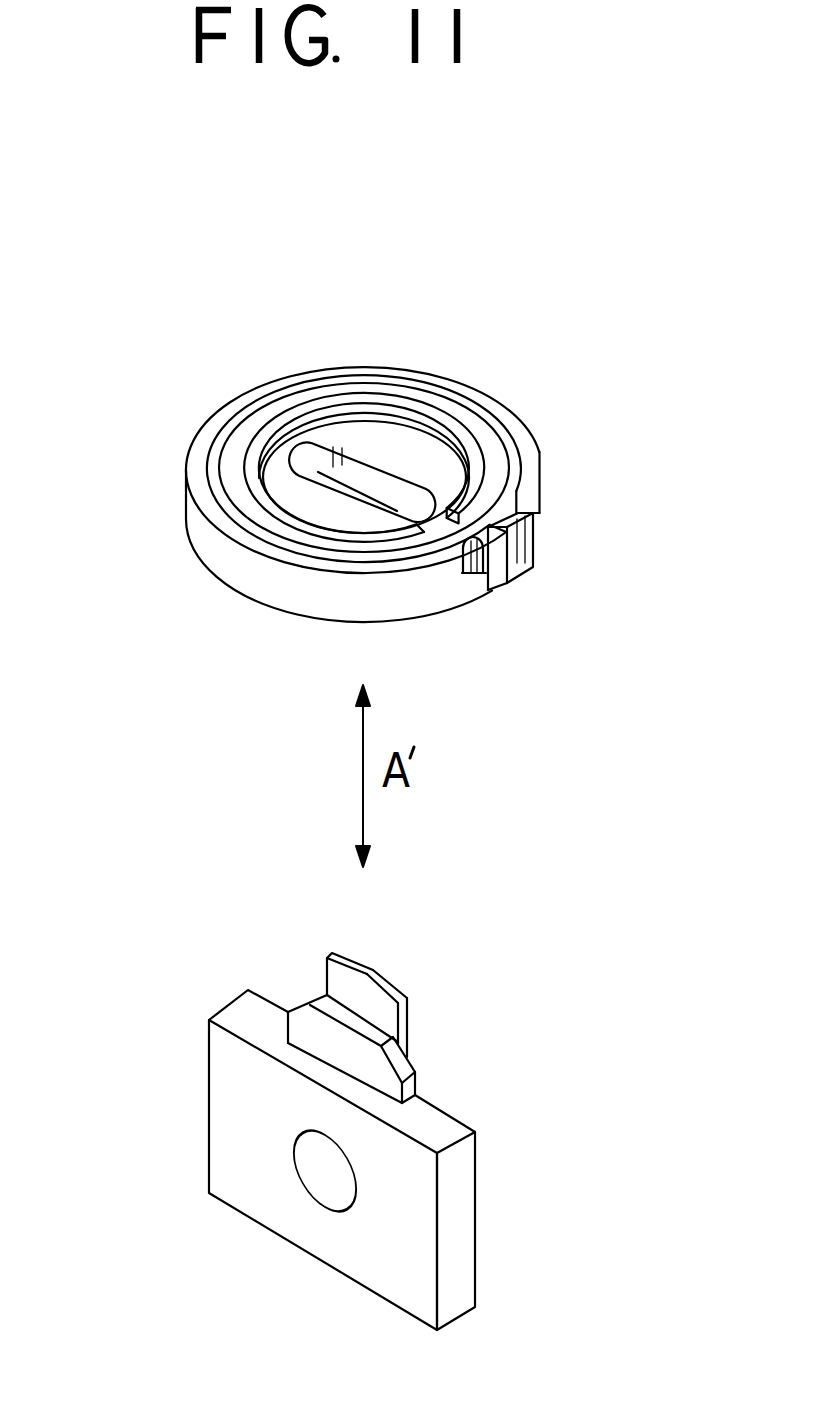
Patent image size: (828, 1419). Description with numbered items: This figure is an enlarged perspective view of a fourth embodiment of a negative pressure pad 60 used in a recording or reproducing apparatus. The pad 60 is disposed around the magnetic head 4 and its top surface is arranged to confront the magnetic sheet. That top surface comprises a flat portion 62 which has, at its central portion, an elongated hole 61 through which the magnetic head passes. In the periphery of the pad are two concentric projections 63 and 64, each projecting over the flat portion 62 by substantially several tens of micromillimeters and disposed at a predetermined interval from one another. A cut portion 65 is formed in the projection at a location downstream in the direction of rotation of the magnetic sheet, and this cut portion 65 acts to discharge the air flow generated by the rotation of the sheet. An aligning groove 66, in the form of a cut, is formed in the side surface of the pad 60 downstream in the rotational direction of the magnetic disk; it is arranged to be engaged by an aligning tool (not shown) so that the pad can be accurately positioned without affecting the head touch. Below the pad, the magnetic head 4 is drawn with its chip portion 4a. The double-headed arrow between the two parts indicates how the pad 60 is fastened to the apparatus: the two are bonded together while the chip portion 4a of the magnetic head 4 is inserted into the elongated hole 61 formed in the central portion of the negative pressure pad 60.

The negative pressure pad 60 is at (377, 471).
The elongated hole 61 is at (327, 447).
The flat portion 62 is at (407, 442).
The concentric projection 63 is at (253, 500).
The concentric projection 64 is at (200, 437).
The cut portion 65 is at (545, 518).
The aligning groove 66 is at (480, 573).
The magnetic head 4 is at (392, 1141).
The chip portion 4a is at (408, 1010).